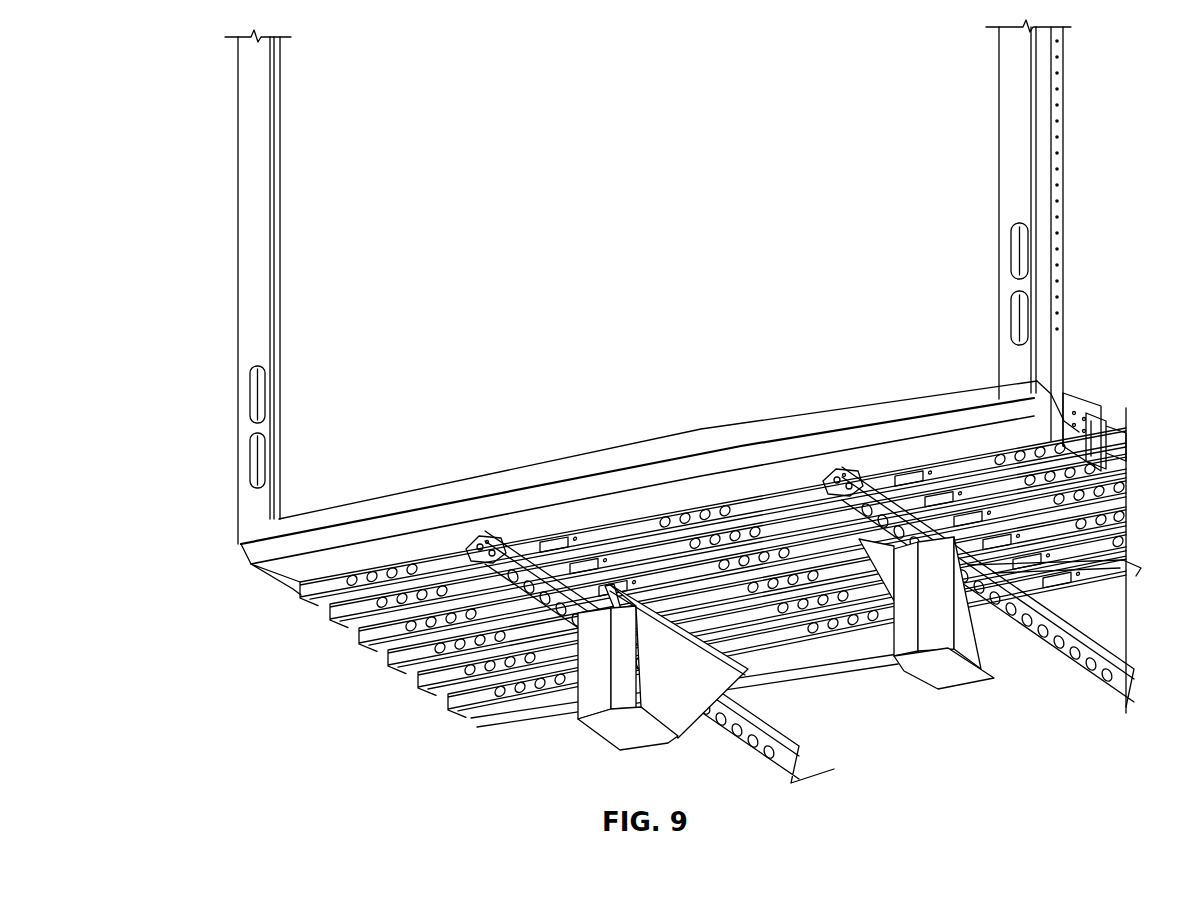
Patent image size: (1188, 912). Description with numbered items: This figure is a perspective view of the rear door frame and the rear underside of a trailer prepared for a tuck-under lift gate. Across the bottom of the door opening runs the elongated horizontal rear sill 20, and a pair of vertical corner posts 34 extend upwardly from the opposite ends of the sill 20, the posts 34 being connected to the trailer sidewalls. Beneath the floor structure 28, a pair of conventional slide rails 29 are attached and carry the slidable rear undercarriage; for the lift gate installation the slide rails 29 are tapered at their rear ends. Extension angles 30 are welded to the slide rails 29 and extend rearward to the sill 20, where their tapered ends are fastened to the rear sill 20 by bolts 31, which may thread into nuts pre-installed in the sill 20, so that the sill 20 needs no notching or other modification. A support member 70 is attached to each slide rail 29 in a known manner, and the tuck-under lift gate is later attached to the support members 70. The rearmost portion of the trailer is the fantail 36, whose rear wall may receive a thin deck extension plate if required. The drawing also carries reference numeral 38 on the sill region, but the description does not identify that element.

The rear sill 20 is at (528, 466).
The floor structure 28 is at (1122, 425).
The slide rails 29 is at (543, 540).
The extension angles 30 is at (557, 625).
The bolts 31 is at (473, 533).
The vertical corner posts 34 is at (252, 213).
The fantail 36 is at (667, 457).
The beam flange 38 is at (457, 518).
The support member 70 is at (667, 713).